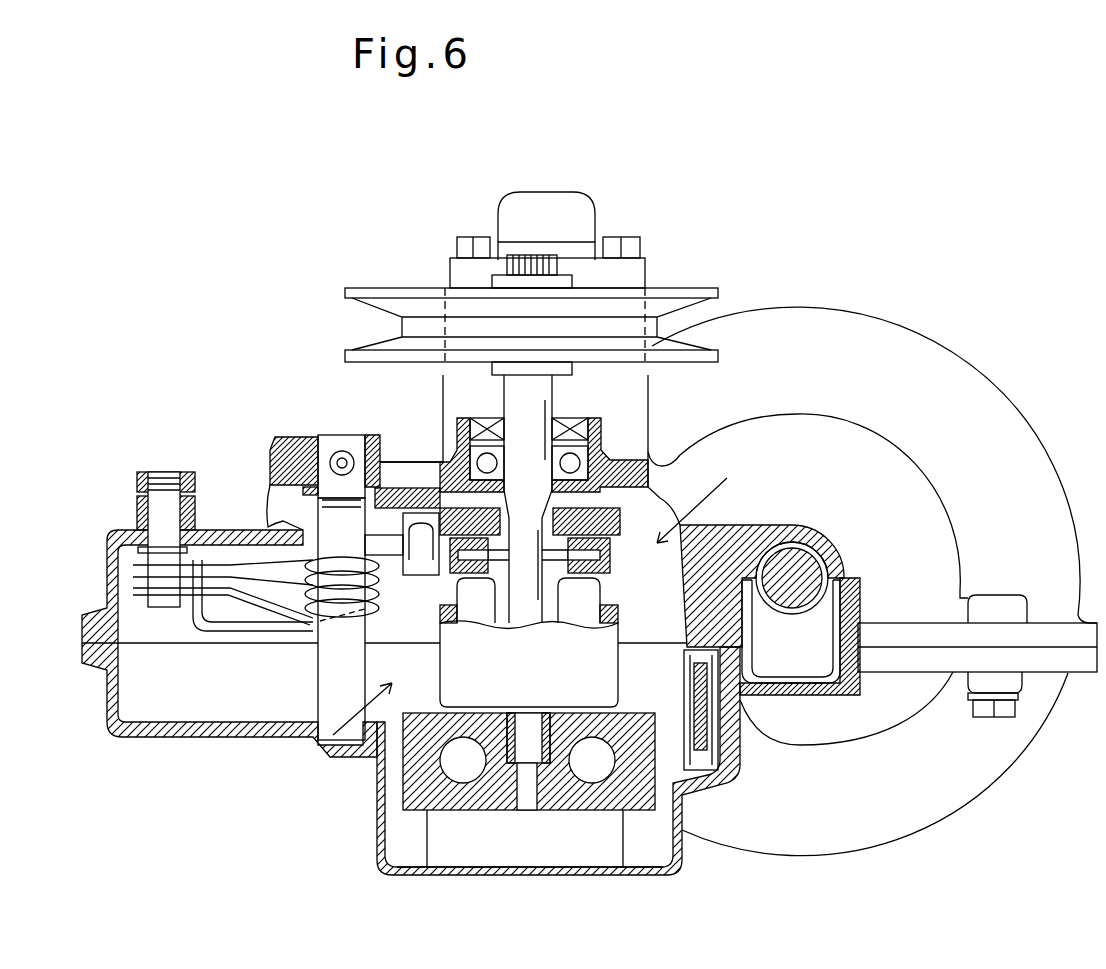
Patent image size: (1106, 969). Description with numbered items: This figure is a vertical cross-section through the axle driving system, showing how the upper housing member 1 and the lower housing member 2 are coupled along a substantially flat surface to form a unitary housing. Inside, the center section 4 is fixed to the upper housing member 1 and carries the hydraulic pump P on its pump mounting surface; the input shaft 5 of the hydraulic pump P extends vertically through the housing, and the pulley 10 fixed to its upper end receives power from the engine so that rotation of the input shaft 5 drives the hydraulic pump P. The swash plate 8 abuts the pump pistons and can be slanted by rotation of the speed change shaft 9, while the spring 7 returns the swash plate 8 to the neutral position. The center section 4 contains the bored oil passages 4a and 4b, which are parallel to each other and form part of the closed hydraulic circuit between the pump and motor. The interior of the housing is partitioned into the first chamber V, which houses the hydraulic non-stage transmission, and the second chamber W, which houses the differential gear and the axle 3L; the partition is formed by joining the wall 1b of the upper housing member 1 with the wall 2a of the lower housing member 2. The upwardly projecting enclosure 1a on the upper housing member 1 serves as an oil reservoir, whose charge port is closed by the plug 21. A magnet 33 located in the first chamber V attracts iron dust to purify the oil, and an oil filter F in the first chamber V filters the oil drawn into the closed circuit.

The upper housing member 1 is at (1050, 483).
The enclosure 1a is at (443, 380).
The wall 1b is at (723, 563).
The lower housing member 2 is at (1033, 720).
The wall 2a is at (743, 660).
The axle 3L is at (817, 540).
The center section 4 is at (408, 773).
The oil passage 4a is at (460, 772).
The oil passage 4b is at (605, 767).
The input shaft 5 is at (556, 400).
The spring 7 is at (223, 567).
The swash plate 8 is at (610, 572).
The speed change shaft 9 is at (342, 433).
The pulley 10 is at (703, 290).
The plug 21 is at (596, 213).
The magnet 33 is at (732, 730).
The oil filter F is at (630, 843).
The hydraulic pump P is at (703, 497).
The first chamber V is at (320, 760).
The second chamber W is at (813, 630).